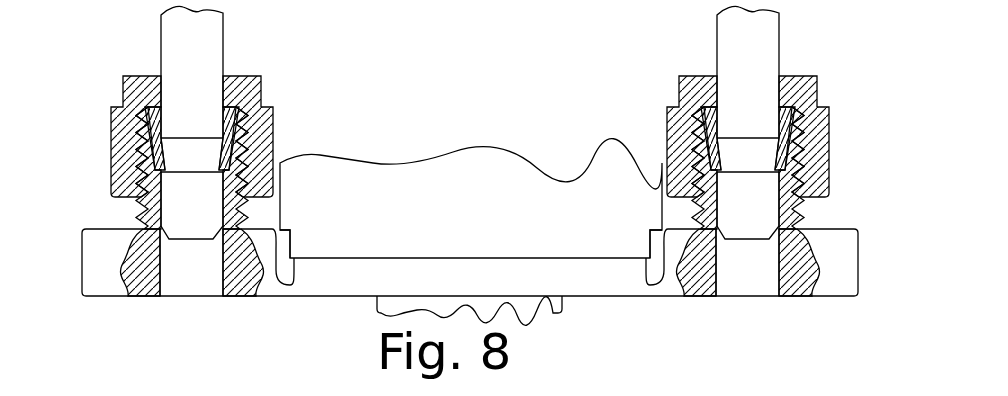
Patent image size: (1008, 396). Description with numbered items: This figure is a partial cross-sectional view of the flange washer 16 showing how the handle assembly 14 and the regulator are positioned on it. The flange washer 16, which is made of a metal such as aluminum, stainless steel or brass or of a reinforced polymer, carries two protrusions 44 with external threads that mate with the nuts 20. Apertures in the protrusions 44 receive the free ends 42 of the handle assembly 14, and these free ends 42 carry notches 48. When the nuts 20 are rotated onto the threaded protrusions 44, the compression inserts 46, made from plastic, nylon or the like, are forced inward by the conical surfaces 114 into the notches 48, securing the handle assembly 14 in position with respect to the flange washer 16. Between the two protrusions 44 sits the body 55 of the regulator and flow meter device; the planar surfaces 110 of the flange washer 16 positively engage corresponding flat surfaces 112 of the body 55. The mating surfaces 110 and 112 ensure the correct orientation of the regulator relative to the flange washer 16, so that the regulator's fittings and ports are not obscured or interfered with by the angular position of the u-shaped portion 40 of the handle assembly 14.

The handle assembly 14 is at (227, 52).
The u-shaped portion 40 is at (209, 76).
The nuts 20 is at (262, 102).
The compression inserts 46 is at (137, 108).
The conical surfaces 114 is at (228, 157).
The notches 48 is at (207, 151).
The protrusions 44 is at (142, 207).
The free ends 42 is at (192, 240).
The flange washer 16 is at (198, 330).
The body 55 is at (455, 152).
The flat surfaces 112 is at (292, 240).
The planar surfaces 110 is at (290, 285).